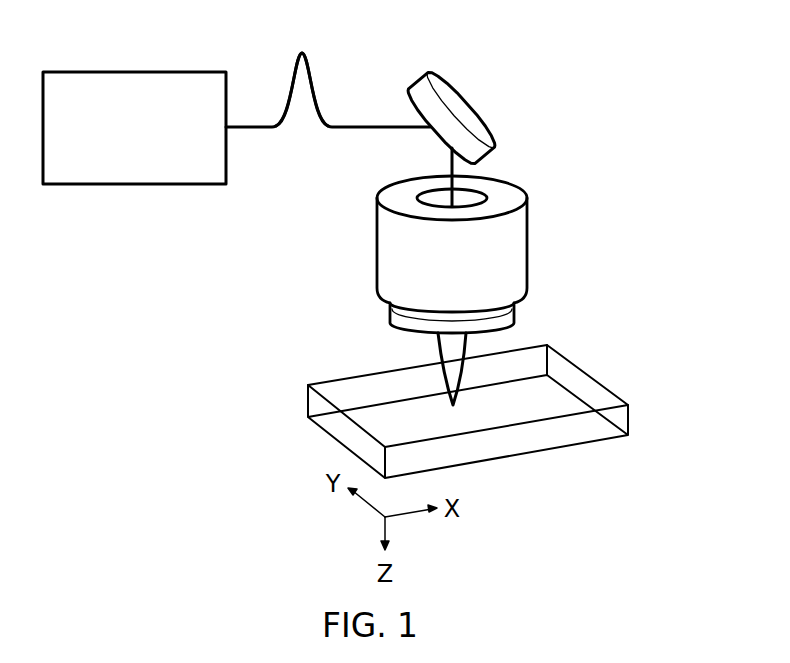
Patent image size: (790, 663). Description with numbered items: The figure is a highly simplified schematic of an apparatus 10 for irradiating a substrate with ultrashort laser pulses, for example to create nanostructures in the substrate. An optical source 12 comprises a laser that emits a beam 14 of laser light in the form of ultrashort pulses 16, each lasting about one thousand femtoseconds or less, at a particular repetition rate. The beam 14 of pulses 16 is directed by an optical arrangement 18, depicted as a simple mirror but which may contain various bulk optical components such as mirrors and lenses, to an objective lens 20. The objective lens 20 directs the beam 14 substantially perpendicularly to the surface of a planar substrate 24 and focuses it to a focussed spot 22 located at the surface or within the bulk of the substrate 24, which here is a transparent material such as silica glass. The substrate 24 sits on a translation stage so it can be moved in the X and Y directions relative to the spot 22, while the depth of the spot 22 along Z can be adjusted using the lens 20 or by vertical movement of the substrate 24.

The laser processing system 10 is at (625, 87).
The optical source 12 is at (118, 142).
The beam 14 is at (253, 130).
The ultrashort pulses 16 is at (308, 80).
The optical arrangement 18 is at (460, 87).
The objective lens 20 is at (530, 242).
The focussed spot 22 is at (453, 405).
The substrate 24 is at (597, 382).